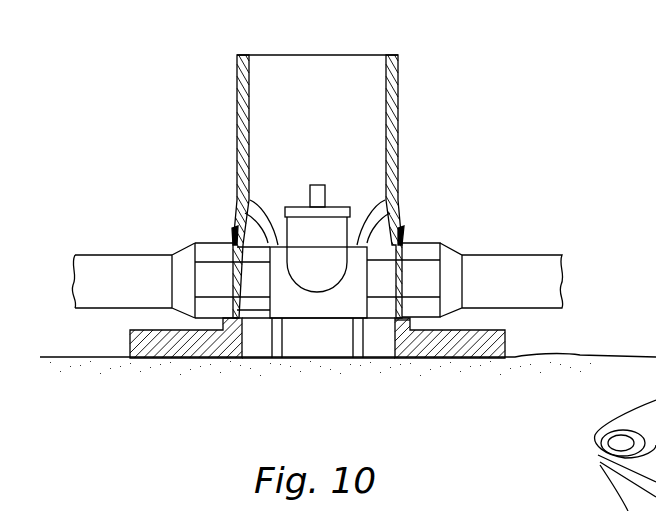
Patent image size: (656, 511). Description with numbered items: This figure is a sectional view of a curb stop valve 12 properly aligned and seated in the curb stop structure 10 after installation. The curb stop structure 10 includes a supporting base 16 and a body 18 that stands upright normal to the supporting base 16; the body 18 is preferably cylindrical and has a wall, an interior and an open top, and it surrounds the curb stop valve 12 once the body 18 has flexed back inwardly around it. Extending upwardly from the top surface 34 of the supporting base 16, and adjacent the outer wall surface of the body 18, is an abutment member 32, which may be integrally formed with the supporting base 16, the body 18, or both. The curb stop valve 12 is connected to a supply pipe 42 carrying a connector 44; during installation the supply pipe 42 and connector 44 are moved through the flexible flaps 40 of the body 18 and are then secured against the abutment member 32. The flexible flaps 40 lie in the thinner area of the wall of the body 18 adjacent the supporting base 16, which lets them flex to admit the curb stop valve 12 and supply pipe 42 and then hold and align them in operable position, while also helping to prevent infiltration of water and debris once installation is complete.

The curb stop structure 10 is at (423, 70).
The curb stop valve 12 is at (333, 207).
The supporting base 16 is at (508, 346).
The body 18 is at (235, 111).
The abutment member 32 is at (407, 322).
The top surface 34 is at (150, 330).
The flexible flaps 40 is at (404, 233).
The supply pipe 42 is at (487, 267).
The connector 44 is at (212, 240).